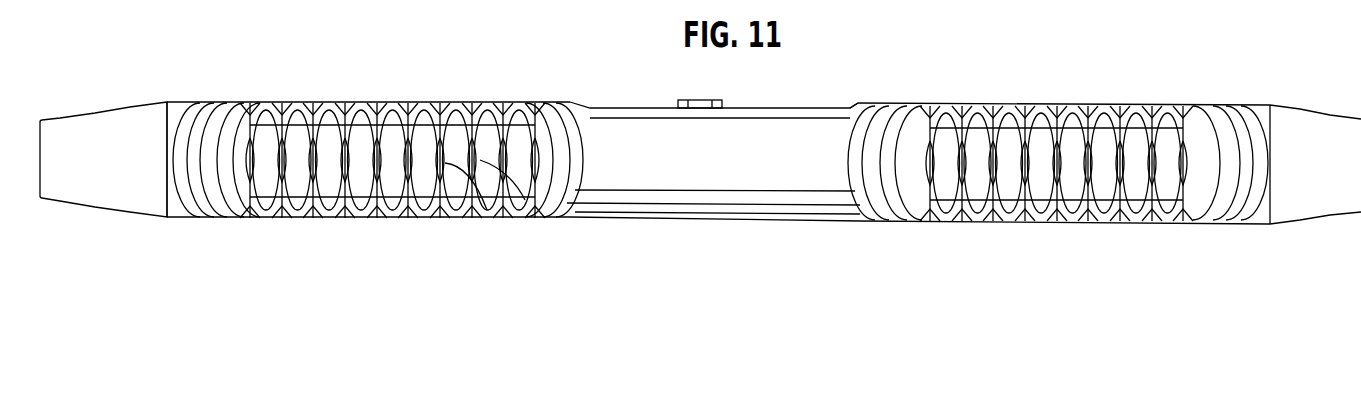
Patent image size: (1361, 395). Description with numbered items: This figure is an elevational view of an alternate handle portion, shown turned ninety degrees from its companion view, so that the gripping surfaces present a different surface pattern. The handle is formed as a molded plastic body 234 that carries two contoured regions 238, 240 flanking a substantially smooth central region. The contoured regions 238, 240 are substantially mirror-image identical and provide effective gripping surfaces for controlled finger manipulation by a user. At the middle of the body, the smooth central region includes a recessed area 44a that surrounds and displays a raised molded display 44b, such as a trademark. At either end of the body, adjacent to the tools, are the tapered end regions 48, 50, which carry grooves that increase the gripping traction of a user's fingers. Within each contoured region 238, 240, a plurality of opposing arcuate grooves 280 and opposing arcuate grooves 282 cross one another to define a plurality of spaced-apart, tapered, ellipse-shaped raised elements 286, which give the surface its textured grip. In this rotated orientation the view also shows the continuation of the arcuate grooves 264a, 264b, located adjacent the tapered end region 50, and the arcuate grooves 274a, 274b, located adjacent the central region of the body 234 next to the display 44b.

The tapered end region 50 is at (143, 102).
The tapered end region 48 is at (1285, 105).
The contoured region 240 is at (390, 162).
The contoured region 238 is at (1063, 100).
The molded plastic body 234 is at (852, 100).
The recessed area 44a is at (856, 104).
The raised molded display 44b is at (698, 100).
The arcuate groove 264a is at (178, 182).
The arcuate groove 264b is at (210, 192).
The opposing arcuate grooves 280 is at (305, 183).
The opposing arcuate grooves 282 is at (320, 185).
The ellipse-shaped raised elements 286 is at (487, 210).
The arcuate groove 274a is at (545, 178).
The arcuate groove 274b is at (580, 165).